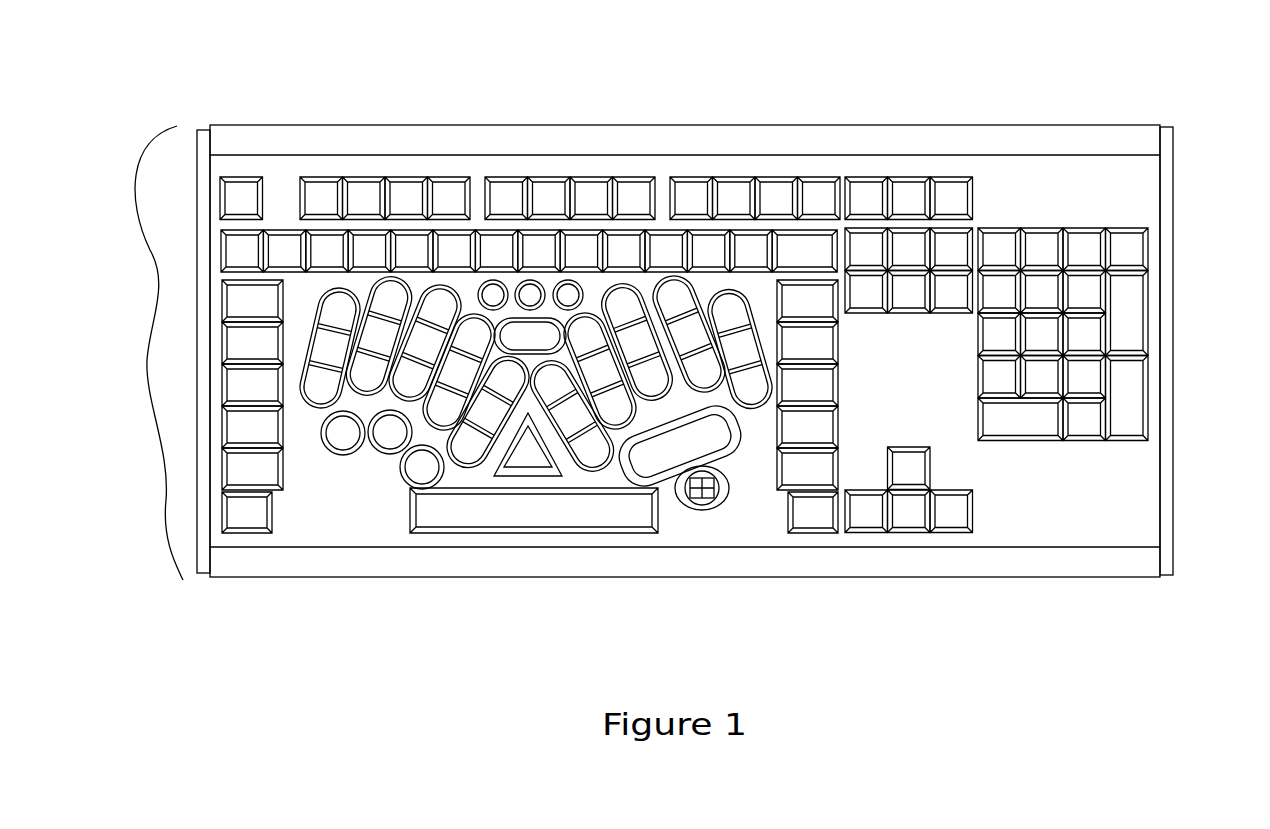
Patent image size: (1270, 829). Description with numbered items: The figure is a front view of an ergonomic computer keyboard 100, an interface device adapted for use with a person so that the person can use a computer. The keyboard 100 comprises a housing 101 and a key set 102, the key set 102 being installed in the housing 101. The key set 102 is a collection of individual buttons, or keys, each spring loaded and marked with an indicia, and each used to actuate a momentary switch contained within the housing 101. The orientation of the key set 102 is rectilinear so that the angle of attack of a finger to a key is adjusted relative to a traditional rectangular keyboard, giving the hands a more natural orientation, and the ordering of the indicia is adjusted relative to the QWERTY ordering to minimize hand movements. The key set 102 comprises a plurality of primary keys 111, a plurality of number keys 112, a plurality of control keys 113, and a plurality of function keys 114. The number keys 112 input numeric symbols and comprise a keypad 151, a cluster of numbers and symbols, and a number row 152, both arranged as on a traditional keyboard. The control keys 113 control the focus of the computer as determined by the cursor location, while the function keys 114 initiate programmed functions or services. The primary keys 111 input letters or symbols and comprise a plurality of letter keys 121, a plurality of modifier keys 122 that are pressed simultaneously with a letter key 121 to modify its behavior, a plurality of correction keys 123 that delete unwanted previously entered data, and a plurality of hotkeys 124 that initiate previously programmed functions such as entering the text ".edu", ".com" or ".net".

The ergonomic computer keyboard 100 is at (196, 106).
The housing 101 is at (1069, 181).
The key set 102 is at (146, 342).
The plurality of primary keys 111 is at (380, 453).
The plurality of number keys 112 is at (232, 247).
The plurality of control keys 113 is at (908, 444).
The plurality of function keys 114 is at (240, 192).
The plurality of letter keys 121 is at (501, 280).
The plurality of modifier keys 122 is at (343, 448).
The plurality of correction keys 123 is at (422, 489).
The plurality of hotkeys 124 is at (427, 282).
The keypad 151 is at (1085, 417).
The number row 152 is at (410, 247).